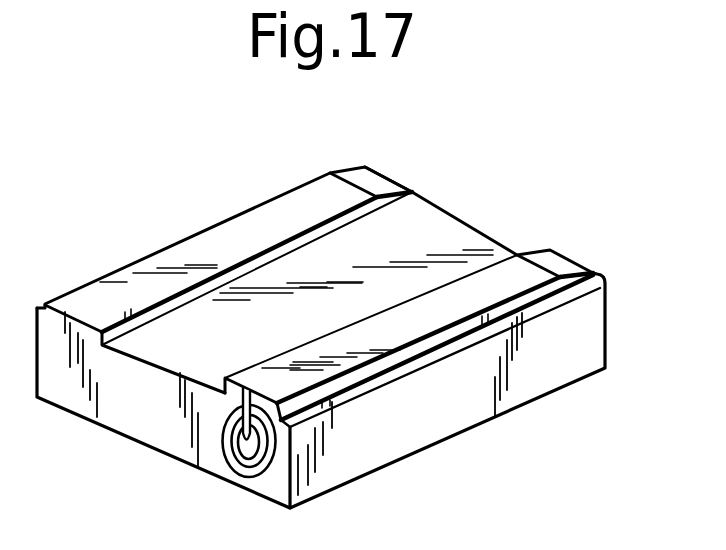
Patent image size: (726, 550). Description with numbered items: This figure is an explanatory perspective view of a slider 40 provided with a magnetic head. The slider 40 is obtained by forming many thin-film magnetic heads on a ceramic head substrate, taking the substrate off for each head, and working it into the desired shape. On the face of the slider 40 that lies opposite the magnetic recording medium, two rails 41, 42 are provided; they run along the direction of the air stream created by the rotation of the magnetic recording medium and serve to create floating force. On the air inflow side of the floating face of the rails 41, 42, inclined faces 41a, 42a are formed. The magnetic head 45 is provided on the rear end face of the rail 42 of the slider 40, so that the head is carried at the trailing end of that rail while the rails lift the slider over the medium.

The slider 40 is at (183, 224).
The rail 41 is at (293, 200).
The inclined face 41a is at (384, 182).
The rail 42 is at (495, 277).
The inclined face 42a is at (567, 268).
The magnetic head 45 is at (256, 481).